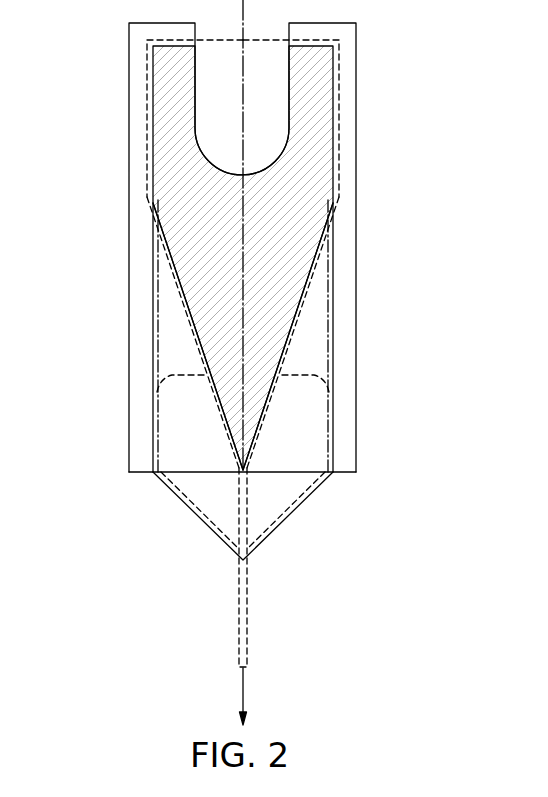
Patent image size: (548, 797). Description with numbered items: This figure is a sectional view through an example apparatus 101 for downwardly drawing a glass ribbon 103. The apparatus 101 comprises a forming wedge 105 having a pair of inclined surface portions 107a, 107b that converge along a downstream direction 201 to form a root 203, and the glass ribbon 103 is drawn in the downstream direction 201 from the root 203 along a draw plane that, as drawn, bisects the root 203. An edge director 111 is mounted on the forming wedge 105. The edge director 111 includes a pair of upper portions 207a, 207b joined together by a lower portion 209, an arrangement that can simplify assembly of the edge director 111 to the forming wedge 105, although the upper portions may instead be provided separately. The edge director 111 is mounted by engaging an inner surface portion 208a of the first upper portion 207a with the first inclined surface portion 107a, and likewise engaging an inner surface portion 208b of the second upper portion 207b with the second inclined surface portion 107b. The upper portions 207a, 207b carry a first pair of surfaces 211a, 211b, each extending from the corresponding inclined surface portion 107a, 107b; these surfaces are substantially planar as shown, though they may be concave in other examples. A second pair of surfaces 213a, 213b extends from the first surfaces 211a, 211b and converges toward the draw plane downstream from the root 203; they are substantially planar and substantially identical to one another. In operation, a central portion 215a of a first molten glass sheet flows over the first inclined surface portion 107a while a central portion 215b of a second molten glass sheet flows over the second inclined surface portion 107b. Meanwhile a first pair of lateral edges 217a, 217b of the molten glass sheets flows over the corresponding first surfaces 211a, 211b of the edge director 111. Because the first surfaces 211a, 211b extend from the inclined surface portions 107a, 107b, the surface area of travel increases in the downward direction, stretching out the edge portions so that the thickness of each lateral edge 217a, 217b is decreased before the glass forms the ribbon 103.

The apparatus 101 is at (367, 102).
The glass ribbon 103 is at (248, 635).
The forming wedge 105 is at (312, 295).
The first inclined surface portion 107a is at (192, 329).
The second inclined surface portion 107b is at (295, 329).
The edge director 111 is at (390, 477).
The downstream direction 201 is at (243, 695).
The root 203 is at (248, 475).
The first upper portion 207a is at (173, 295).
The second upper portion 207b is at (348, 268).
The inner surface portion 208a is at (180, 263).
The inner surface portion 208b is at (305, 263).
The lower portion 209 is at (177, 518).
The first surface 211a is at (191, 336).
The second surface 211b is at (299, 336).
The second surface 213a is at (213, 510).
The second surface 213b is at (293, 484).
The central portion 215a is at (157, 392).
The central portion 215b is at (329, 392).
The lateral edge 217a is at (161, 478).
The lateral edge 217b is at (327, 435).